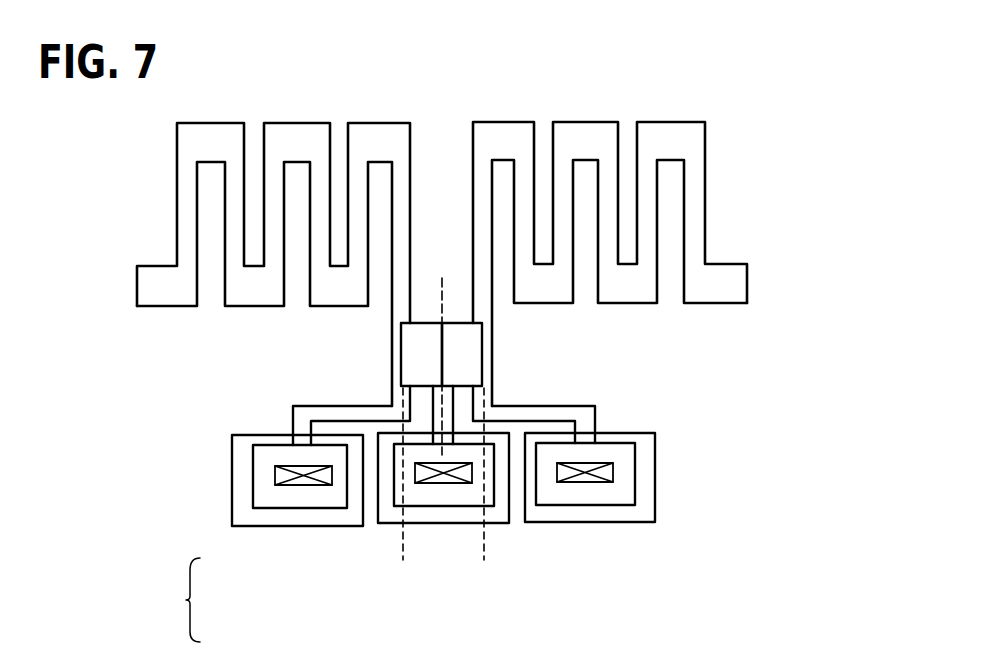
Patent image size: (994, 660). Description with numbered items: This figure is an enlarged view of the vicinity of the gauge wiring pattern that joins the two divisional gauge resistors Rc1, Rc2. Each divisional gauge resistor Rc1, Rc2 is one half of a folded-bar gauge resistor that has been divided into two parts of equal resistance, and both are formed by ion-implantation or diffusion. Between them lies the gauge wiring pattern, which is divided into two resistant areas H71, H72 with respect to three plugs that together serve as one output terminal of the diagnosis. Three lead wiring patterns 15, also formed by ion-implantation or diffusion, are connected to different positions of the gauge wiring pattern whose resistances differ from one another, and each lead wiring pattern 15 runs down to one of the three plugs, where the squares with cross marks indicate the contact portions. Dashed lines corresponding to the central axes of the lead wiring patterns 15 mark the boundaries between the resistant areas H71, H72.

The divisional gauge resistor Rc2 is at (295, 133).
The divisional gauge resistor Rc1 is at (587, 132).
The resistant area H72 is at (415, 352).
The resistant area H71 is at (470, 352).
The lead wiring pattern 15 is at (302, 415).